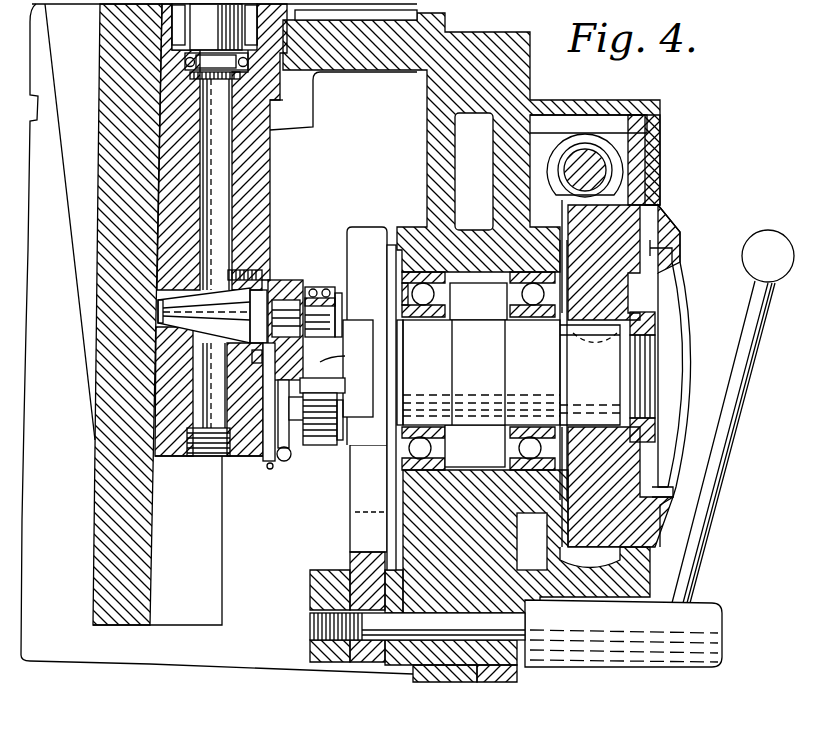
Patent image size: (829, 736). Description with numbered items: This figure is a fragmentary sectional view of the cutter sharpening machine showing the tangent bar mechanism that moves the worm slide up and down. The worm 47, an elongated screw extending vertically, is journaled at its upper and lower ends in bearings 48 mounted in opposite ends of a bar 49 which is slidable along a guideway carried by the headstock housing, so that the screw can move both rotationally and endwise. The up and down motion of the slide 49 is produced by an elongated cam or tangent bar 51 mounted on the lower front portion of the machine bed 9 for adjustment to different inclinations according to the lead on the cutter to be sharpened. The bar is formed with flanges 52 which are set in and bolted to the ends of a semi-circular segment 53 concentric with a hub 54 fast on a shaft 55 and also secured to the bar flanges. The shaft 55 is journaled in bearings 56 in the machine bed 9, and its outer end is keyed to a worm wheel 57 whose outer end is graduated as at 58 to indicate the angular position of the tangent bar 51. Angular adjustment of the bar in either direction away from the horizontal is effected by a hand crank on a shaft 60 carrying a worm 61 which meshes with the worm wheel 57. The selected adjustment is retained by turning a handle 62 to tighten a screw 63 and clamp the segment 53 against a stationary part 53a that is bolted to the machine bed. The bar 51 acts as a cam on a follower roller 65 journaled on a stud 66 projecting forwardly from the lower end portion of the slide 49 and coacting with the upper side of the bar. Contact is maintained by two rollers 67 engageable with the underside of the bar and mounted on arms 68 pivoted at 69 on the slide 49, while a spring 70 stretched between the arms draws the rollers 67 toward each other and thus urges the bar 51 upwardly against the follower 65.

The machine bed 9 is at (430, 70).
The worm 47 is at (218, 34).
The bearings 48 is at (185, 60).
The bar 49 is at (270, 172).
The tangent bar 51 is at (323, 362).
The flanges 52 is at (392, 320).
The semi-circular segment 53 is at (358, 530).
The stationary part 53a is at (444, 682).
The hub 54 is at (380, 228).
The shaft 55 is at (478, 393).
The bearings 56 is at (527, 298).
The worm wheel 57 is at (575, 218).
The graduations 58 is at (668, 212).
The shaft 60 is at (600, 172).
The worm 61 is at (608, 156).
The handle 62 is at (722, 467).
The screw 63 is at (313, 618).
The follower roller 65 is at (322, 290).
The stud 66 is at (284, 307).
The rollers 67 is at (320, 446).
The arms 68 is at (291, 460).
The pivot 69 is at (261, 455).
The spring 70 is at (268, 470).